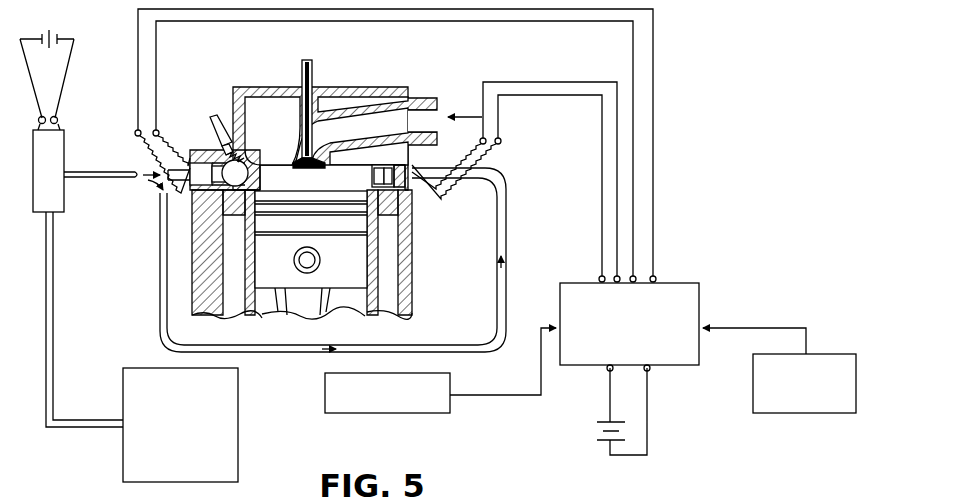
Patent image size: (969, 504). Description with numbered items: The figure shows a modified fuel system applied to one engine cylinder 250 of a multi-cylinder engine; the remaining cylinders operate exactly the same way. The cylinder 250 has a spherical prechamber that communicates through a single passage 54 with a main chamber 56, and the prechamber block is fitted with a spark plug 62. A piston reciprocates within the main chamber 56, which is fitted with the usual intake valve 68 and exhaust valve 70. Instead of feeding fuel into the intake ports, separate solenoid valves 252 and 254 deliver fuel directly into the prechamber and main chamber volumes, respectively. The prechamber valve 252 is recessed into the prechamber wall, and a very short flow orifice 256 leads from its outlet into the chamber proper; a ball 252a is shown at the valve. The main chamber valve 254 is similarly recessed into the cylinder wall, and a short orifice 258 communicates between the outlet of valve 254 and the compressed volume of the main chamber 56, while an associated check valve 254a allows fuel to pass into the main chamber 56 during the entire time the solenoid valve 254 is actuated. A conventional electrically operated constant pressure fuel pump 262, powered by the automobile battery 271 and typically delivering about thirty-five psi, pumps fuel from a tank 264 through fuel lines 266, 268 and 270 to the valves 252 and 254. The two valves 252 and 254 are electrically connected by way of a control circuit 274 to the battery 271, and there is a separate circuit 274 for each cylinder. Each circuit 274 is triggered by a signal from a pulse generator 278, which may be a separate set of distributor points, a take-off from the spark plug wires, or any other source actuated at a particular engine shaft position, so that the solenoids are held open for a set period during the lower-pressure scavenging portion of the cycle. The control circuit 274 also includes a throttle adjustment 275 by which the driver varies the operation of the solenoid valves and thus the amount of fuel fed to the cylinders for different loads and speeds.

The engine cylinder 250 is at (222, 82).
The single passage 54 is at (262, 165).
The intake valve 68 is at (301, 62).
The main chamber 56 is at (342, 177).
The exhaust valve 70 is at (308, 186).
The main chamber solenoid valve 254 is at (405, 205).
The short orifice 258 is at (405, 225).
The check valve 254a is at (378, 178).
The prechamber solenoid valve 252 is at (205, 192).
The ball valve 252a is at (203, 172).
The spark plug 62 is at (213, 116).
The short flow orifice 256 is at (182, 190).
The fuel line 268 is at (172, 170).
The fuel pump 262 is at (55, 200).
The fuel line 266 is at (130, 178).
The automobile battery 271 is at (60, 32).
The fuel line 270 is at (160, 318).
The fuel tank 264 is at (243, 422).
The throttle adjustment 275 is at (328, 376).
The control circuit 274 is at (558, 362).
The pulse generator 278 is at (803, 414).